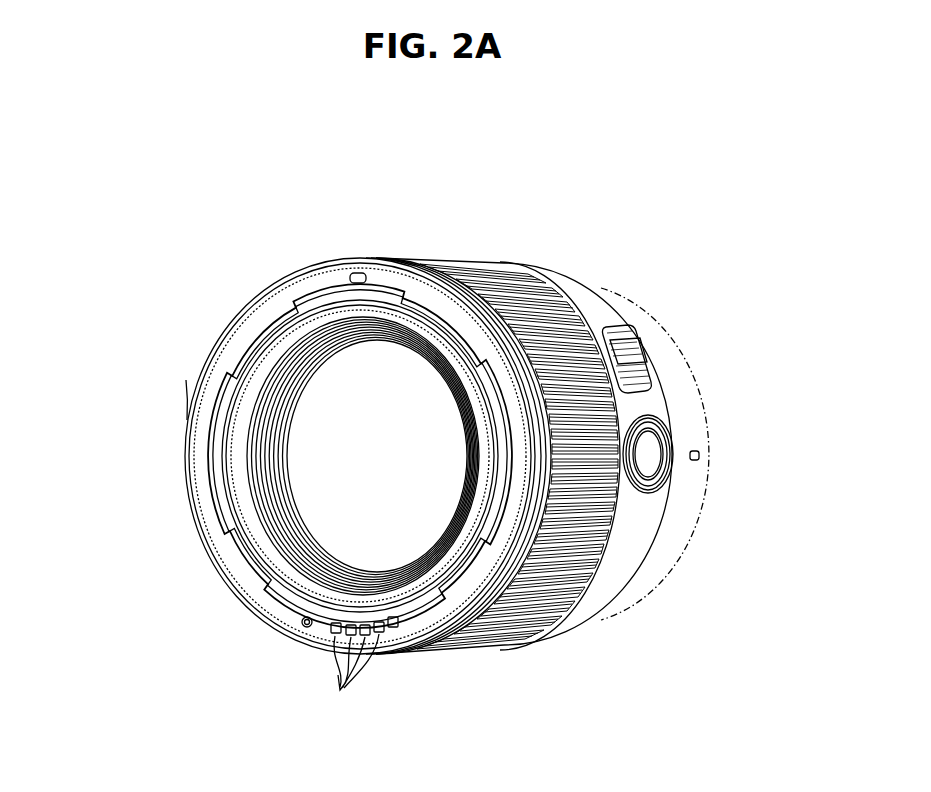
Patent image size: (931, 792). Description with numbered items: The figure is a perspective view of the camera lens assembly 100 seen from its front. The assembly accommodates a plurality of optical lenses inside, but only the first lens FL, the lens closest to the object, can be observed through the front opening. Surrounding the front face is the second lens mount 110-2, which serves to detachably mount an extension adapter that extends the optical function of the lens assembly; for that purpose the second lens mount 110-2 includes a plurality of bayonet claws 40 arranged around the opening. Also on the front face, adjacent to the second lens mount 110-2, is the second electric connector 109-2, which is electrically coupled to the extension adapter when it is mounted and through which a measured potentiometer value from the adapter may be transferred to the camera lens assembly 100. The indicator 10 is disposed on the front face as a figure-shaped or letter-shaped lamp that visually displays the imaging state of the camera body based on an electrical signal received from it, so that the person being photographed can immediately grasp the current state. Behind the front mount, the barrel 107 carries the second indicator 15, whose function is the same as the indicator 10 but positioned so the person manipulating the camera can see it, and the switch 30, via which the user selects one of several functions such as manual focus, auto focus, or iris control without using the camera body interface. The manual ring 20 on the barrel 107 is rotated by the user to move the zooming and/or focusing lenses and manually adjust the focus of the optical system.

The camera lens assembly 100 is at (428, 111).
The indicator 10 is at (360, 270).
The bayonet claws 40 is at (410, 298).
The manual ring 20 is at (500, 277).
The barrel 107 is at (560, 270).
The switch 30 is at (640, 332).
The second indicator 15 is at (703, 455).
The second lens mount 110-2 is at (196, 380).
The first lens FL is at (305, 446).
The second electric connector 109-2 is at (350, 667).